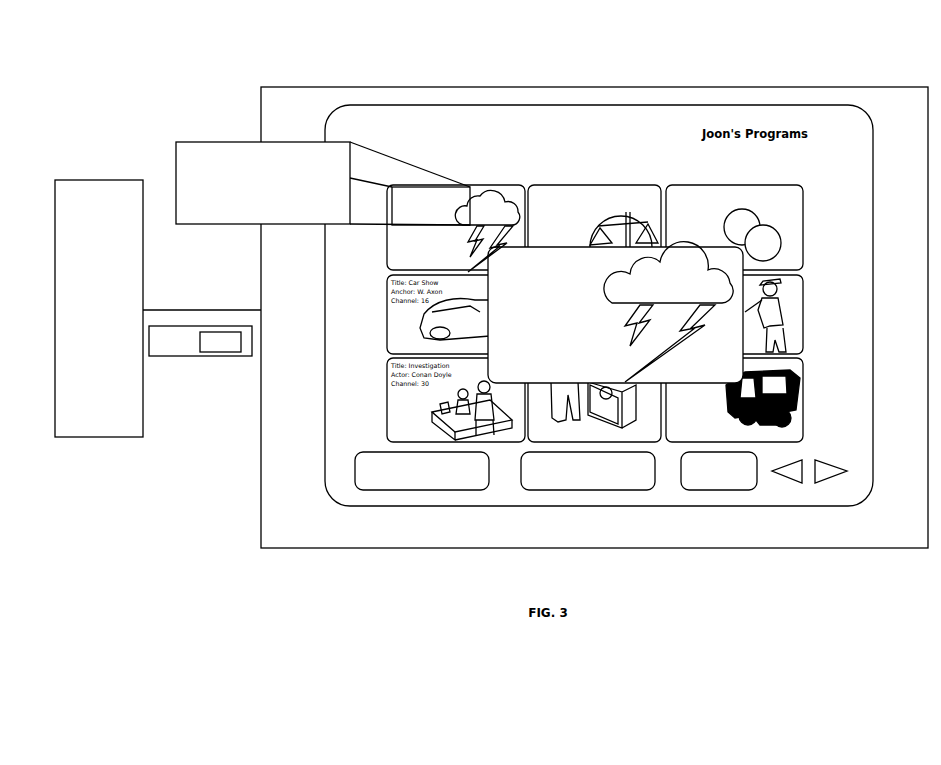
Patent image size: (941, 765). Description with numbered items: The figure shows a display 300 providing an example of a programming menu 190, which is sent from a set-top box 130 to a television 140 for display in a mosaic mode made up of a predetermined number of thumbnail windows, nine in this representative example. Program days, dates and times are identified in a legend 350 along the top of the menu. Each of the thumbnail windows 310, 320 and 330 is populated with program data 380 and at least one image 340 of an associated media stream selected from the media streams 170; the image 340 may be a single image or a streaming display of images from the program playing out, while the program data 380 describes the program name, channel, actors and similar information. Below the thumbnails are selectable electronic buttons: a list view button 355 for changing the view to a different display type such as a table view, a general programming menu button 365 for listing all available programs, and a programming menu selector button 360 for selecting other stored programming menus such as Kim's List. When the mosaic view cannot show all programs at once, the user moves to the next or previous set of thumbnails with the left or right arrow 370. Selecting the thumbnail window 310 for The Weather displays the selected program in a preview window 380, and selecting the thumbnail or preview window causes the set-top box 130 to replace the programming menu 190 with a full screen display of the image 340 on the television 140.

The set-top box 130 is at (99, 308).
The television 140 is at (594, 317).
The media streams 170 is at (220, 342).
The programming menu 190 is at (200, 341).
The program guide display screen 300 is at (552, 68).
The thumbnail window 310 is at (460, 185).
The thumbnail window 320 is at (608, 192).
The thumbnail window 330 is at (778, 217).
The image 340 is at (594, 286).
The legend 350 is at (419, 142).
The list view button 355 is at (428, 490).
The programming menu selector button 360 is at (720, 490).
The general programming menu button 365 is at (594, 490).
The left or right arrow 370 is at (812, 480).
The program data 380 is at (236, 142).